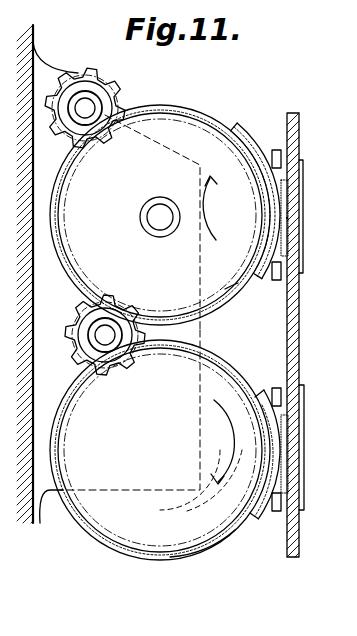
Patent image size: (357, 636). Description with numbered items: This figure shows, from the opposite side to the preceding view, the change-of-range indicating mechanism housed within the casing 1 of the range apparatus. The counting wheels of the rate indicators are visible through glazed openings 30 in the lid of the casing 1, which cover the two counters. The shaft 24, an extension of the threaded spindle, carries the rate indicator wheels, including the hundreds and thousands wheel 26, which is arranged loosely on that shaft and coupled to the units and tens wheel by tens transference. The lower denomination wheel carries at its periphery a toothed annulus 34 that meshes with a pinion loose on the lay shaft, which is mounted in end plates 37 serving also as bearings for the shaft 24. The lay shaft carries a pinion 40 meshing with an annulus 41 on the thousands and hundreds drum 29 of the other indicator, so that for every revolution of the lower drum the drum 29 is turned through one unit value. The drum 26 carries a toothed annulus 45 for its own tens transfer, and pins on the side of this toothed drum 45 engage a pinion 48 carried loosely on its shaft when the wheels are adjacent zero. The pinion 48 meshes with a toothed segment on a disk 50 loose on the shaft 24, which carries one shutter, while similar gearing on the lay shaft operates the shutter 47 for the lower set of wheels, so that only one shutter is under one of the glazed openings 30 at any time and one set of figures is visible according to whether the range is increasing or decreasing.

The casing 1 is at (34, 42).
The pinion 48 is at (108, 80).
The hundreds and thousands wheel 26 is at (200, 140).
The disk 50 is at (214, 146).
The shutter 47 is at (248, 150).
The toothed annulus 45 is at (245, 285).
The toothed annulus 34 is at (272, 262).
The extension of spindle / shaft 24 is at (158, 219).
The pinion 40 is at (200, 341).
The annulus 41 is at (118, 548).
The glazed openings 30 is at (256, 420).
The thousands and hundreds wheel 29 is at (226, 536).
The end plates 37 is at (50, 513).